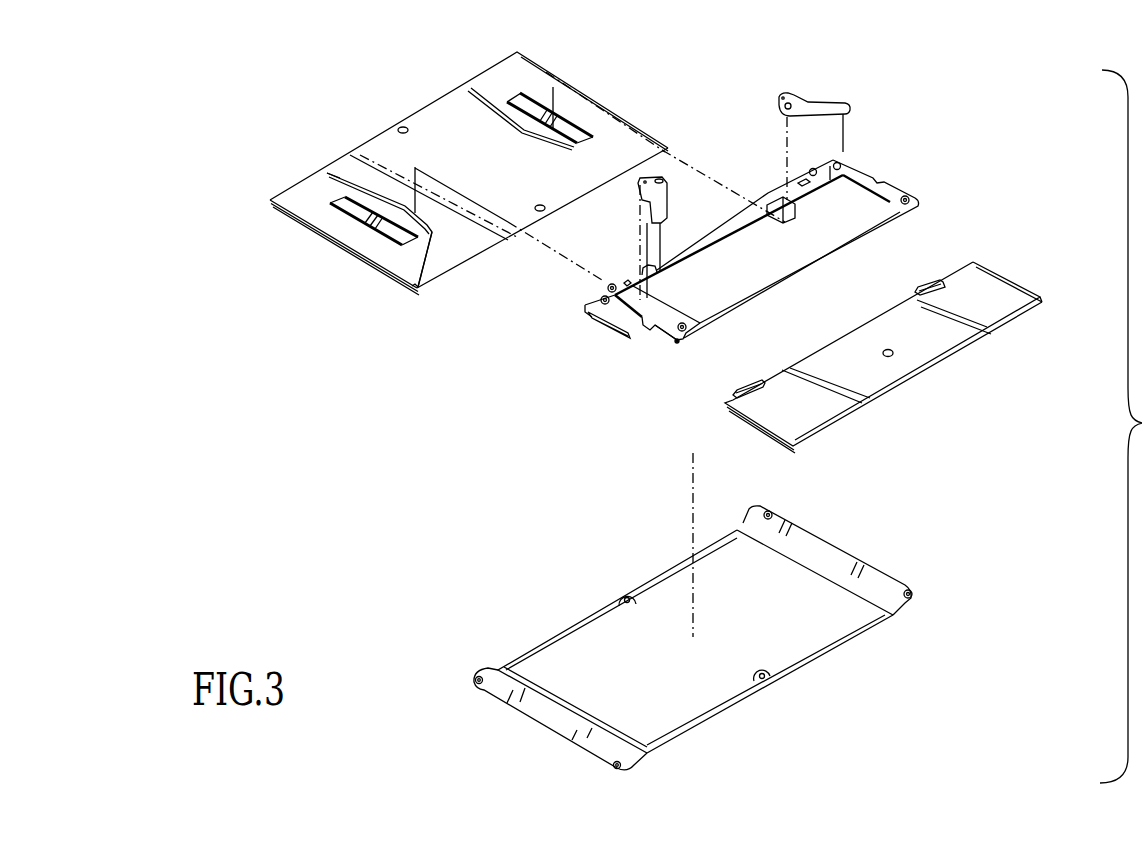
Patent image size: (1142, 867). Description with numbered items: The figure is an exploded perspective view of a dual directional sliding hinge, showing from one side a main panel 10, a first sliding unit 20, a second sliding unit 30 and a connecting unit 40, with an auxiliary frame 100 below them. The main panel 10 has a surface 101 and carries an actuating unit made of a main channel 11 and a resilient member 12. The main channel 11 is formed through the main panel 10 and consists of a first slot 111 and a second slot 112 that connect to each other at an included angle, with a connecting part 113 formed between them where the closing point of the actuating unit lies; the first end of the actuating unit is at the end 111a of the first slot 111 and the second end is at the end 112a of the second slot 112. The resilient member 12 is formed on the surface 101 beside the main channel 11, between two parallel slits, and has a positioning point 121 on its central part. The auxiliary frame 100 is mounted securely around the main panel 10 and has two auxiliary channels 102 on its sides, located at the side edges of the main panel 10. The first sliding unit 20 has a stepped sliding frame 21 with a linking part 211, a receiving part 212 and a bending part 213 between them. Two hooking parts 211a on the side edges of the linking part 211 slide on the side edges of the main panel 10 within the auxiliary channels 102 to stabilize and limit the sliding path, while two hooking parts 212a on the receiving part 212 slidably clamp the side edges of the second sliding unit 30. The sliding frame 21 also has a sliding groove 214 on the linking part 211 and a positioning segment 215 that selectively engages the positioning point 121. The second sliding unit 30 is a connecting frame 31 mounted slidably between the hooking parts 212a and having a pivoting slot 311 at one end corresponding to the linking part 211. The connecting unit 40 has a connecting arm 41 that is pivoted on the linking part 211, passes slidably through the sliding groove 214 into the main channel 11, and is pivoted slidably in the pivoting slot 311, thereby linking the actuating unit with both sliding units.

The main panel 10 is at (450, 112).
The main channel 11 is at (348, 173).
The resilient member 12 is at (357, 210).
The surface 101 is at (460, 258).
The first slot 111 is at (483, 90).
The end of the first slot 111a is at (327, 173).
The second slot 112 is at (554, 131).
The end of the second slot 112a is at (413, 288).
The connecting part 113 is at (522, 135).
The positioning point 121 is at (370, 224).
The first sliding unit 20 is at (865, 156).
The sliding frame 21 is at (902, 186).
The linking part 211 is at (732, 213).
The hooking parts 211a is at (587, 311).
The receiving part 212 is at (700, 324).
The hooking parts 212a is at (662, 325).
The bending part 213 is at (832, 182).
The sliding groove 214 is at (644, 272).
The positioning segment 215 is at (606, 289).
The second sliding unit 30 is at (1030, 281).
The connecting frame 31 is at (923, 368).
The pivoting slot 311 is at (945, 278).
The connecting unit 40 is at (798, 90).
The connecting arm 41 is at (808, 101).
The auxiliary frame 100 is at (863, 568).
The auxiliary channels 102 is at (887, 616).